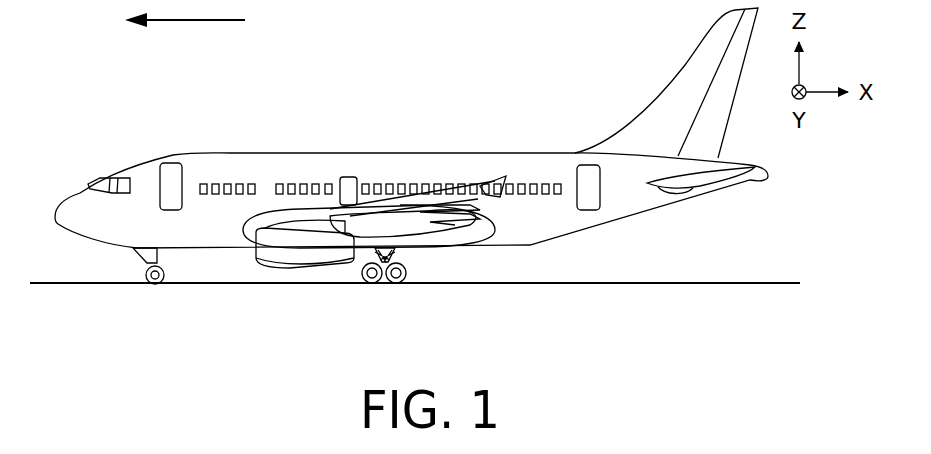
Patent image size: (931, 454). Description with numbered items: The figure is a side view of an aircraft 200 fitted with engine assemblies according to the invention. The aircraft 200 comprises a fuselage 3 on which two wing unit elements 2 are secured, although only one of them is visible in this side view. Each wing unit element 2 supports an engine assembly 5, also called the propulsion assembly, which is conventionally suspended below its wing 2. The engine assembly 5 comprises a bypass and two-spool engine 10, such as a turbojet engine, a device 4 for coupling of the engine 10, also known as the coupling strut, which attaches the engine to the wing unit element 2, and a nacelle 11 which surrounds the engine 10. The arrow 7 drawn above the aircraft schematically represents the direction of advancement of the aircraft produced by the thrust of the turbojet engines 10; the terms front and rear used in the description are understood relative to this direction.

The aircraft 200 is at (314, 108).
The wing unit element 2 is at (380, 210).
The fuselage 3 is at (207, 168).
The device for coupling of the engine 4 is at (327, 226).
The engine assembly 5 is at (265, 300).
The arrow 7 is at (192, 22).
The engine 10 is at (313, 262).
The nacelle 11 is at (290, 260).